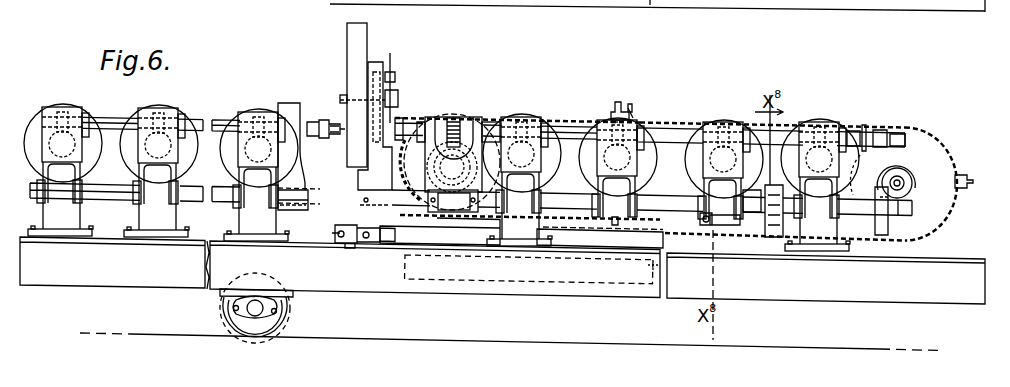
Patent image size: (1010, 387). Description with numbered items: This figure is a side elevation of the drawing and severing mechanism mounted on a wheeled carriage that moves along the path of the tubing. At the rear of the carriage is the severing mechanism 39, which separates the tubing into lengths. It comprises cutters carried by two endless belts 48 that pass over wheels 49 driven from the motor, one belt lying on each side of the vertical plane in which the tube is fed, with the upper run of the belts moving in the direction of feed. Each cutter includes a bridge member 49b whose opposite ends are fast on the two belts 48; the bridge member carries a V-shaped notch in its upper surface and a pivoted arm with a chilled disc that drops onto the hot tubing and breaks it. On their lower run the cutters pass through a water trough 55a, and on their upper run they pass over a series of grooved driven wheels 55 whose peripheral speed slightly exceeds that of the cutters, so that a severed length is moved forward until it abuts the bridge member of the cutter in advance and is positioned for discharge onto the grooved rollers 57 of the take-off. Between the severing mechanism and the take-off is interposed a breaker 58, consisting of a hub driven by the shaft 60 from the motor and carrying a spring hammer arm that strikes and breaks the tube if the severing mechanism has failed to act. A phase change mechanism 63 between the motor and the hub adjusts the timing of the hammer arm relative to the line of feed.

The severing mechanism 39 is at (570, 156).
The endless belts 48 is at (918, 119).
The wheels 49 is at (929, 151).
The bridge member 49b is at (947, 197).
The grooved driven wheels 55 is at (553, 140).
The water trough 55a is at (449, 223).
The grooved rollers 57 is at (227, 113).
The breaker 58 is at (353, 39).
The shaft 60 is at (411, 127).
The phase change mechanism 63 is at (395, 117).